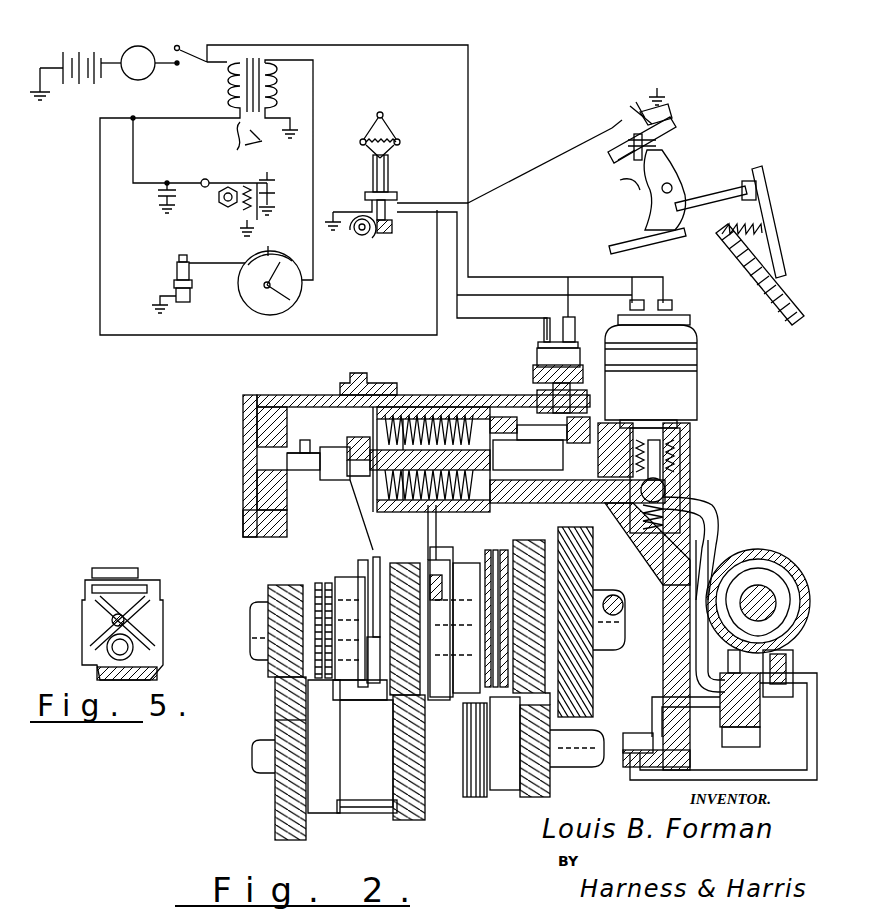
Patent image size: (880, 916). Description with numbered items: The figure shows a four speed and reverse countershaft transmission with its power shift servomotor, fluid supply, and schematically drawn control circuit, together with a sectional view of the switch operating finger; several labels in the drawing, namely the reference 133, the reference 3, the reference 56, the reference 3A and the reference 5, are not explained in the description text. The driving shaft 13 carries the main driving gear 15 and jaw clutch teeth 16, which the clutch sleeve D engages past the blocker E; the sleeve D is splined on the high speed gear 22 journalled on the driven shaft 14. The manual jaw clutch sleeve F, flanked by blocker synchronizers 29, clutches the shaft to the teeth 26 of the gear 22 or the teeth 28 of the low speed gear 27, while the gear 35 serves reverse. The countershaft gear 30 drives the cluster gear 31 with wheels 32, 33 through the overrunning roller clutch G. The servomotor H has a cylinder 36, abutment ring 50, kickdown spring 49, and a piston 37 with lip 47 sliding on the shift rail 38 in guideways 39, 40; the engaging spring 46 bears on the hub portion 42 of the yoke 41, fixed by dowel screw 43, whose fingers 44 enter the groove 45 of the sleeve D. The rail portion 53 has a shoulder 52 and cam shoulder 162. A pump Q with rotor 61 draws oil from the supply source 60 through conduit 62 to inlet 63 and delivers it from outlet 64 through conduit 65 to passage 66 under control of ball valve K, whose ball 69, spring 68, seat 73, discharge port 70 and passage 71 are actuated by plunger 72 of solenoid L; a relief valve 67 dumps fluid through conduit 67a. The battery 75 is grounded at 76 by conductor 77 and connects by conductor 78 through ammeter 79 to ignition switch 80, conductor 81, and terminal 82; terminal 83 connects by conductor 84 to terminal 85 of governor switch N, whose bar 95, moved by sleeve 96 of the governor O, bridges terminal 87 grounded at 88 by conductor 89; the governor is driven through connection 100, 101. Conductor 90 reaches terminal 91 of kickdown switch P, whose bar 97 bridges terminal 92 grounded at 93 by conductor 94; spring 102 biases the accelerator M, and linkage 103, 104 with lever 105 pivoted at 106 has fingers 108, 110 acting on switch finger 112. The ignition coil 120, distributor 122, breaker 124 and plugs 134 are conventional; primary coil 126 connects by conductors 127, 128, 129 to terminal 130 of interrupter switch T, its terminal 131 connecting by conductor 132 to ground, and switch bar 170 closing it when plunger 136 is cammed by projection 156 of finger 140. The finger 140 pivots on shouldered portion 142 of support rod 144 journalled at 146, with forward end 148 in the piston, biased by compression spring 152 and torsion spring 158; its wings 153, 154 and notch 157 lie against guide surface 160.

In FIG. 2, the conductor 77 is at (43, 68).
In FIG. 2, the storage battery 75 is at (78, 50).
In FIG. 2, the conductor 78 is at (101, 58).
In FIG. 2, the ground 76 is at (48, 98).
In FIG. 2, the ammeter 79 is at (143, 48).
In FIG. 2, the ignition switch 80 is at (190, 42).
In FIG. 2, the conductor 81 is at (378, 42).
In FIG. 2, the ignition coil 120 is at (258, 58).
In FIG. 2, the primary coil 126 is at (226, 86).
In FIG. 2, the secondary winding 133 is at (292, 78).
In FIG. 2, the conductor 127 is at (143, 116).
In FIG. 2, the conductor 128 is at (100, 216).
In FIG. 2, the conductor 129 is at (207, 340).
In FIG. 2, the breaker 124 is at (204, 180).
In FIG. 2, the plugs 134 is at (177, 266).
In FIG. 2, the distributor 122 is at (300, 305).
In FIG. 2, the governor O is at (385, 120).
In FIG. 2, the insulated sliding sleeve 96 is at (397, 158).
In FIG. 2, the governor switch N is at (398, 171).
In FIG. 2, the conductor switch bar 95 is at (372, 176).
In FIG. 2, the terminal 85 is at (400, 200).
In FIG. 2, the second terminal 87 is at (368, 201).
In FIG. 2, the conductor 89 is at (333, 216).
In FIG. 2, the ground 88 is at (325, 236).
In FIG. 2, the drive connection 100 is at (386, 235).
In FIG. 2, the governor driving means 101 is at (366, 245).
In FIG. 2, the conductor 132 is at (437, 283).
In FIG. 2, the conductor 90 is at (516, 175).
In FIG. 2, the conductor 84 is at (522, 318).
In FIG. 2, the terminal 131 is at (580, 300).
In FIG. 2, the terminal 130 is at (545, 340).
In FIG. 2, the switch bar 170 is at (538, 360).
In FIG. 2, the terminal 83 is at (632, 298).
In FIG. 2, the terminal 82 is at (665, 304).
In FIG. 2, the kickdown switch P is at (610, 146).
In FIG. 2, the terminal 91 is at (603, 130).
In FIG. 2, the second terminal 92 is at (636, 102).
In FIG. 2, the conductor 94 is at (657, 88).
In FIG. 2, the ground 93 is at (674, 100).
In FIG. 2, the conductor bar 97 is at (652, 140).
In FIG. 2, the finger 110 is at (656, 151).
In FIG. 2, the pivot 106 is at (679, 183).
In FIG. 2, the linkage 103 is at (736, 189).
In FIG. 2, the accelerator M is at (766, 172).
In FIG. 2, the actuating finger 112 is at (620, 166).
In FIG. 2, the finger 108 is at (616, 186).
In FIG. 2, the lever 105 is at (626, 200).
In FIG. 2, the linkage 104 is at (617, 243).
In FIG. 2, the coil spring 102 is at (732, 258).
In FIG. 2, the passage 66 is at (466, 490).
In FIG. 2, the abutment ring 50 is at (384, 397).
In FIG. 2, the servomotor H is at (460, 398).
In FIG. 2, the piston 37 is at (452, 410).
In FIG. 2, the kickdown spring 49 is at (420, 420).
In FIG. 2, the lip 47 is at (455, 505).
In FIG. 2, the journal 146 is at (500, 418).
In FIG. 2, the shift rail 38 is at (430, 459).
In FIG. 2, the engaging spring 46 is at (400, 457).
In FIG. 2, the forward end portion 148 is at (475, 455).
In FIG. 2, the yoke 41 is at (350, 490).
In FIG. 2, the shaft 3 is at (332, 506).
In FIG. 2, the guideway 39 is at (305, 440).
In FIG. 2, the dowel screw 43 is at (358, 437).
In FIG. 2, the hub portion 42 is at (333, 452).
In FIG. 2, the shoulder 52 is at (528, 455).
In FIG. 2, the support rod 144 is at (535, 455).
In FIG. 2, the torsion spring 158 is at (538, 471).
In FIG. 5, the torsion spring 158 is at (95, 648).
In FIG. 2, the operating plunger 136 is at (556, 440).
In FIG. 5, the operating plunger 136 is at (145, 582).
In FIG. 2, the guideway 40 is at (495, 490).
In FIG. 2, the portion of the shift rail 53 is at (551, 497).
In FIG. 2, the passage 56 is at (572, 497).
In FIG. 2, the groove 45 is at (366, 560).
In FIG. 2, the cylinder 36 is at (432, 560).
In FIG. 2, the main driving gear 15 is at (278, 585).
In FIG. 2, the driving shaft 13 is at (250, 646).
In FIG. 2, the shaft 3A is at (252, 766).
In FIG. 2, the countershaft gear 30 is at (277, 812).
In FIG. 2, the jaw clutch teeth 16 is at (316, 583).
In FIG. 2, the blocker E is at (328, 583).
In FIG. 2, the clutch sleeve D is at (342, 580).
In FIG. 2, the fingers 44 is at (354, 615).
In FIG. 2, the high speed gear 22 is at (408, 563).
In FIG. 2, the gear wheel 32 is at (410, 818).
In FIG. 2, the overrunning roller clutch G is at (340, 820).
In FIG. 2, the jaw clutch teeth 26 is at (441, 621).
In FIG. 2, the jaw clutch sleeve F is at (470, 565).
In FIG. 2, the jaw clutch teeth 28 is at (493, 550).
In FIG. 2, the blocker synchronizers 29 is at (485, 572).
In FIG. 2, the low speed gear 27 is at (520, 540).
In FIG. 2, the gear 35 is at (587, 562).
In FIG. 2, the driven shaft 14 is at (616, 628).
In FIG. 2, the gear wheel 33 is at (556, 775).
In FIG. 2, the cluster gear 31 is at (465, 797).
In FIG. 2, the solenoid L is at (698, 386).
In FIG. 2, the valve 5 is at (629, 383).
In FIG. 2, the finger 140 is at (652, 383).
In FIG. 5, the finger 140 is at (150, 616).
In FIG. 2, the compression spring 152 is at (636, 399).
In FIG. 2, the passage 71 is at (675, 407).
In FIG. 2, the ball valve K is at (690, 470).
In FIG. 2, the plunger 72 is at (690, 437).
In FIG. 2, the discharge port 70 is at (683, 455).
In FIG. 2, the seat 73 is at (691, 460).
In FIG. 2, the ball 69 is at (668, 490).
In FIG. 2, the shouldered portion 142 is at (630, 445).
In FIG. 2, the cam shoulder 162 is at (630, 470).
In FIG. 5, the cam shoulder 162 is at (100, 668).
In FIG. 2, the valve spring 68 is at (705, 512).
In FIG. 2, the conduit 65 is at (730, 540).
In FIG. 2, the pump Q is at (760, 550).
In FIG. 2, the rotor 61 is at (768, 578).
In FIG. 2, the pump inlet 63 is at (782, 660).
In FIG. 2, the pump outlet 64 is at (725, 665).
In FIG. 2, the relief valve 67 is at (720, 748).
In FIG. 2, the conduit 67a is at (655, 697).
In FIG. 2, the supply source 60 is at (650, 745).
In FIG. 2, the conduit 62 is at (750, 772).
In FIG. 5, the notch 157 is at (108, 577).
In FIG. 5, the interrupter switch T is at (128, 570).
In FIG. 5, the radial projection 156 is at (150, 600).
In FIG. 5, the wing 153 is at (150, 630).
In FIG. 5, the flat guide surface 160 is at (85, 605).
In FIG. 5, the wing 154 is at (88, 628).